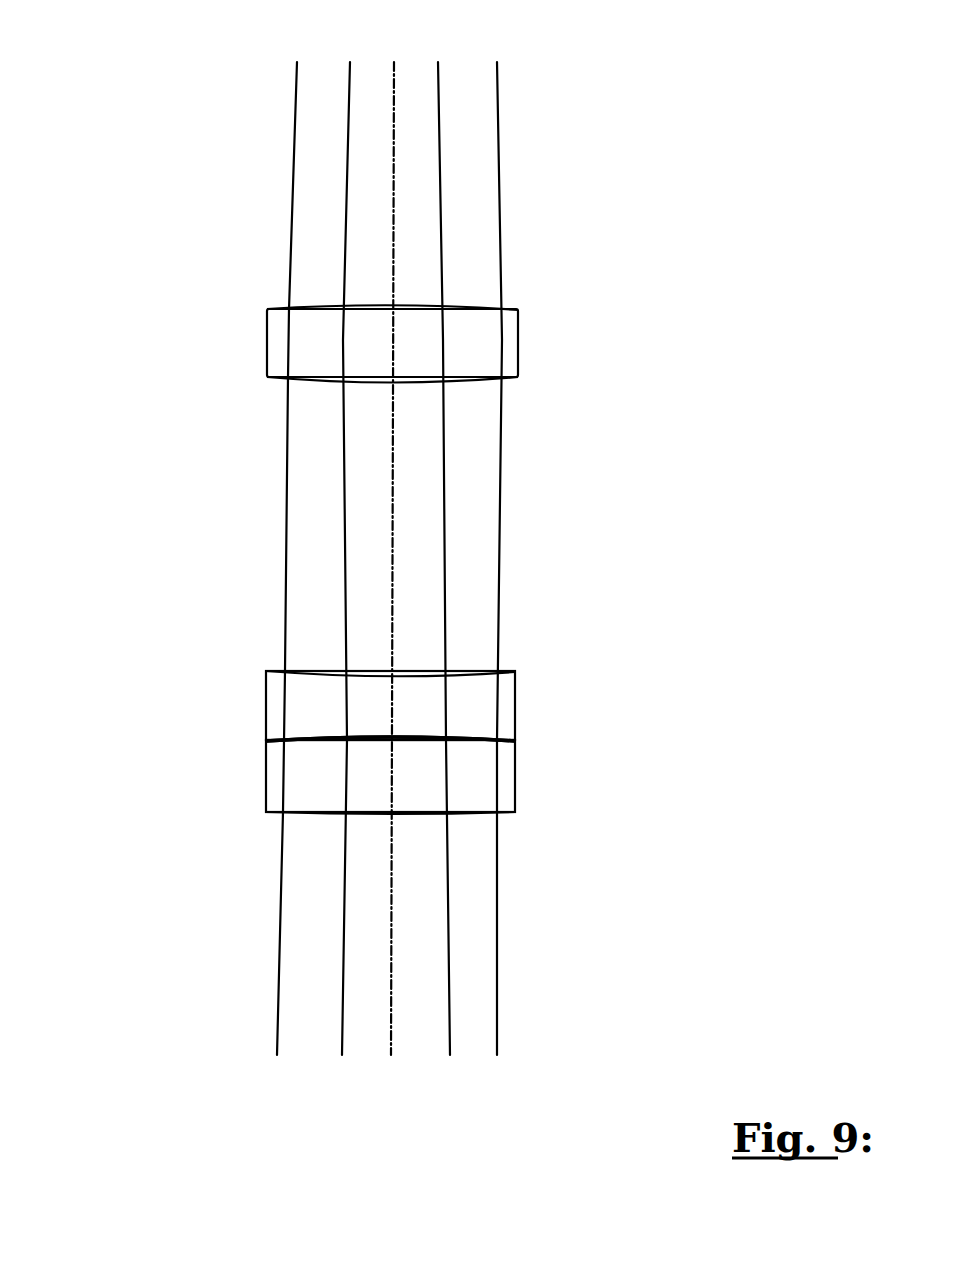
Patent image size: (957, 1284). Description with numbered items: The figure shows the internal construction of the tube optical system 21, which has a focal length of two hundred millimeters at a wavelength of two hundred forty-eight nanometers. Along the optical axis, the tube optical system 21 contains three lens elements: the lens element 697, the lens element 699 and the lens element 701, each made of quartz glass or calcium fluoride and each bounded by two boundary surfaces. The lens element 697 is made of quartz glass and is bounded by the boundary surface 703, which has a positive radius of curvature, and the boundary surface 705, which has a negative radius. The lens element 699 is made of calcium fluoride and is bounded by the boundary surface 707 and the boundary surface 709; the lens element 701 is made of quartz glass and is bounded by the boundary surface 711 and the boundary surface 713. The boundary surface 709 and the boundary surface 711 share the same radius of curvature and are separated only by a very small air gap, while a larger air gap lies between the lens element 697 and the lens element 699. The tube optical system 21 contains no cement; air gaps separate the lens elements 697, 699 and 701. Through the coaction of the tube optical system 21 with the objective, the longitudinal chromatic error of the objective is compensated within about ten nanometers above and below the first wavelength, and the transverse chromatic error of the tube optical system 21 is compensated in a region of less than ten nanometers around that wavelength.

The tube optical system 21 is at (118, 115).
The lens element 701 is at (380, 319).
The boundary surface 713 is at (322, 310).
The boundary surface 711 is at (308, 378).
The lens element 699 is at (360, 692).
The lens element 697 is at (371, 761).
The boundary surface 709 is at (310, 673).
The boundary surface 707 is at (310, 740).
The boundary surface 705 is at (285, 743).
The boundary surface 703 is at (300, 813).